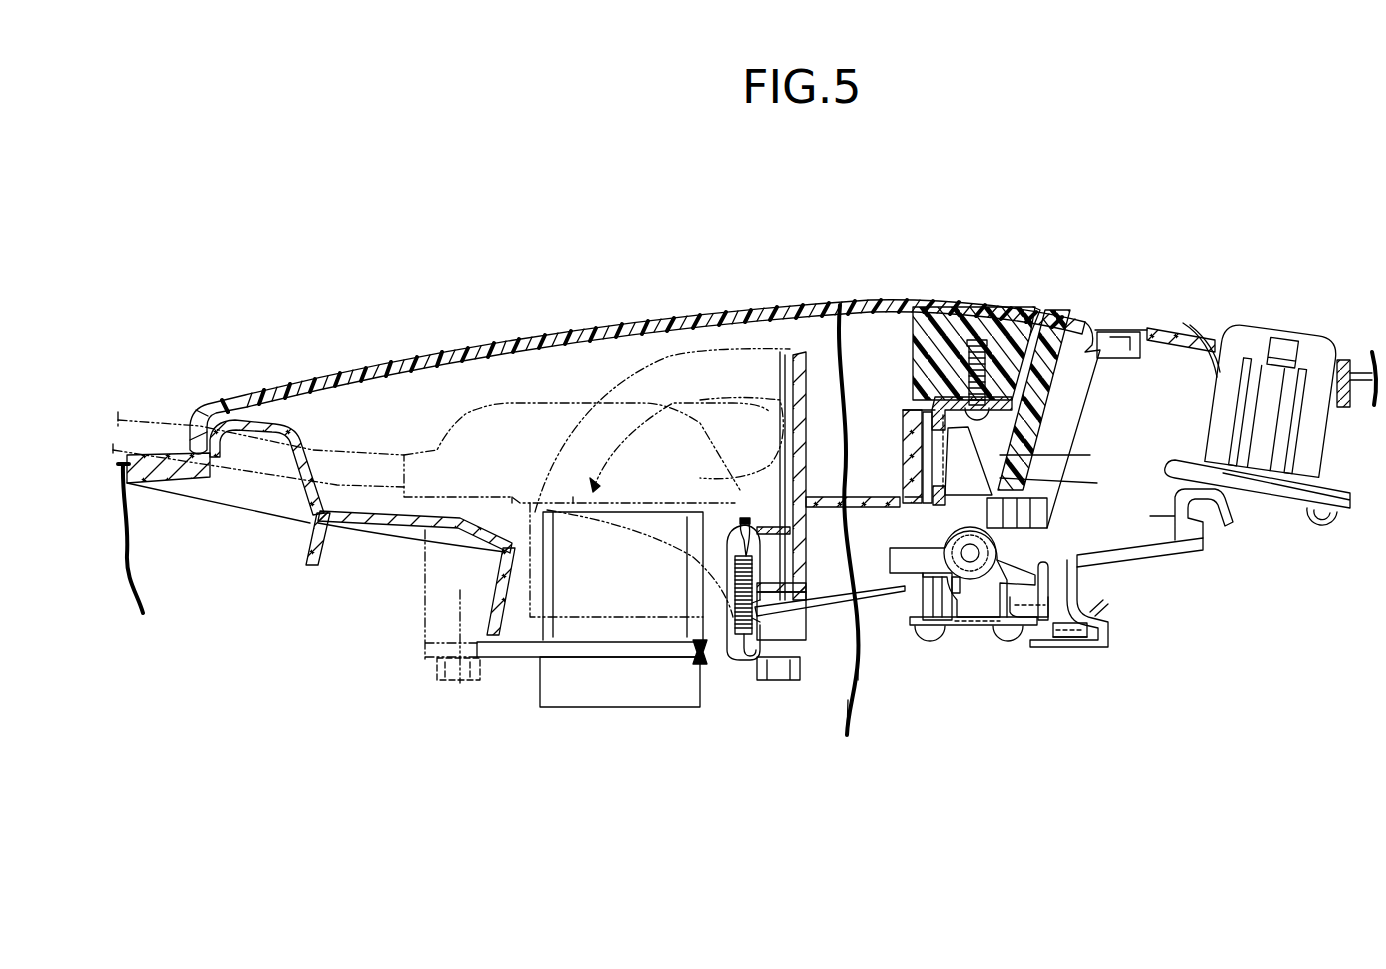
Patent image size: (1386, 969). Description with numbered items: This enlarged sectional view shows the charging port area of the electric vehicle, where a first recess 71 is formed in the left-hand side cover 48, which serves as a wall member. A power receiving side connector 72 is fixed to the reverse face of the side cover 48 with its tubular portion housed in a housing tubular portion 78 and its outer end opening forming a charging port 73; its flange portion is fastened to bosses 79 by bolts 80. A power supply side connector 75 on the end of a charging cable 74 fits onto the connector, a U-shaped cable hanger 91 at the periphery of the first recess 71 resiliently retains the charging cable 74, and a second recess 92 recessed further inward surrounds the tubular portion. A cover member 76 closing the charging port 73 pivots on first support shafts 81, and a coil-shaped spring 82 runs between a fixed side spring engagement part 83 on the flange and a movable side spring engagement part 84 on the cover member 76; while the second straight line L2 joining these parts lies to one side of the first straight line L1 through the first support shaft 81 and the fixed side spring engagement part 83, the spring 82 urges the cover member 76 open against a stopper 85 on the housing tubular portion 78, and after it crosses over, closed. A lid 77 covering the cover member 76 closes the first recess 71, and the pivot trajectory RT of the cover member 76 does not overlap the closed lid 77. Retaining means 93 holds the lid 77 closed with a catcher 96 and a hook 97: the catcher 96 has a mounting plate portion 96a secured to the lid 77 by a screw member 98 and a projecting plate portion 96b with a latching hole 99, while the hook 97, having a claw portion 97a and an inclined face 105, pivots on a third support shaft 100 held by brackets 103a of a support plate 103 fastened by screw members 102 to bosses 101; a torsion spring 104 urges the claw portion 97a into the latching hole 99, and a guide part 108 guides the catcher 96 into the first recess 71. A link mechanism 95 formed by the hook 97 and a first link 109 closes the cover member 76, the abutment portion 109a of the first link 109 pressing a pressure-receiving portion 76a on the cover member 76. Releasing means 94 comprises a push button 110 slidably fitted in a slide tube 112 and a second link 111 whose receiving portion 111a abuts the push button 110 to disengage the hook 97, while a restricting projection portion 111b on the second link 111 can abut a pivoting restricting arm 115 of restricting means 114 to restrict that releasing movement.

The left-hand side cover 48 is at (1157, 330).
The first recess 71 is at (1037, 337).
The power receiving side connector 72 is at (538, 497).
The charging port 73 is at (573, 497).
The charging cable 74 is at (353, 463).
The power supply side connector 75 is at (510, 403).
The cover member 76 is at (800, 353).
The pressure-receiving portion 76a is at (812, 607).
The lid 77 is at (620, 322).
The housing tubular portion 78 is at (432, 578).
The bosses 79 is at (433, 607).
The bolts 80 is at (460, 683).
The first support shafts 81 is at (743, 523).
The coil-shaped spring 82 is at (722, 593).
The fixed side spring engagement part 83 is at (757, 663).
The movable side spring engagement part 84 is at (750, 527).
The stopper 85 is at (817, 477).
The cable hanger 91 is at (272, 420).
The second recess 92 is at (460, 513).
The retaining means 93 is at (1050, 458).
The releasing means 94 is at (1277, 320).
The link mechanism 95 is at (854, 606).
The catcher 96 is at (933, 390).
The mounting plate portion 96a is at (1013, 362).
The projecting plate portion 96b is at (993, 505).
The hook 97 is at (970, 452).
The claw portion 97a is at (913, 503).
The screw member 98 is at (975, 340).
The latching hole 99 is at (1045, 485).
The third support shaft 100 is at (973, 560).
The bosses 101 is at (920, 610).
The screw members 102 is at (930, 640).
The support plate 103 is at (967, 623).
The brackets 103a is at (1050, 580).
The torsion spring 104 is at (1030, 620).
The inclined face 105 is at (945, 440).
The guide part 108 is at (903, 437).
The first link 109 is at (812, 640).
The abutment portion 109a is at (812, 648).
The push button 110 is at (1290, 333).
The second link 111 is at (1185, 545).
The receiving portion 111a is at (1227, 514).
The restricting projection portion 111b is at (1060, 597).
The slide tube 112 is at (1193, 340).
The restricting means 114 is at (1088, 627).
The pivoting restricting arm 115 is at (1077, 640).
The pivot trajectory RT is at (700, 333).
The first straight line L1 is at (737, 478).
The second straight line L2 is at (766, 428).